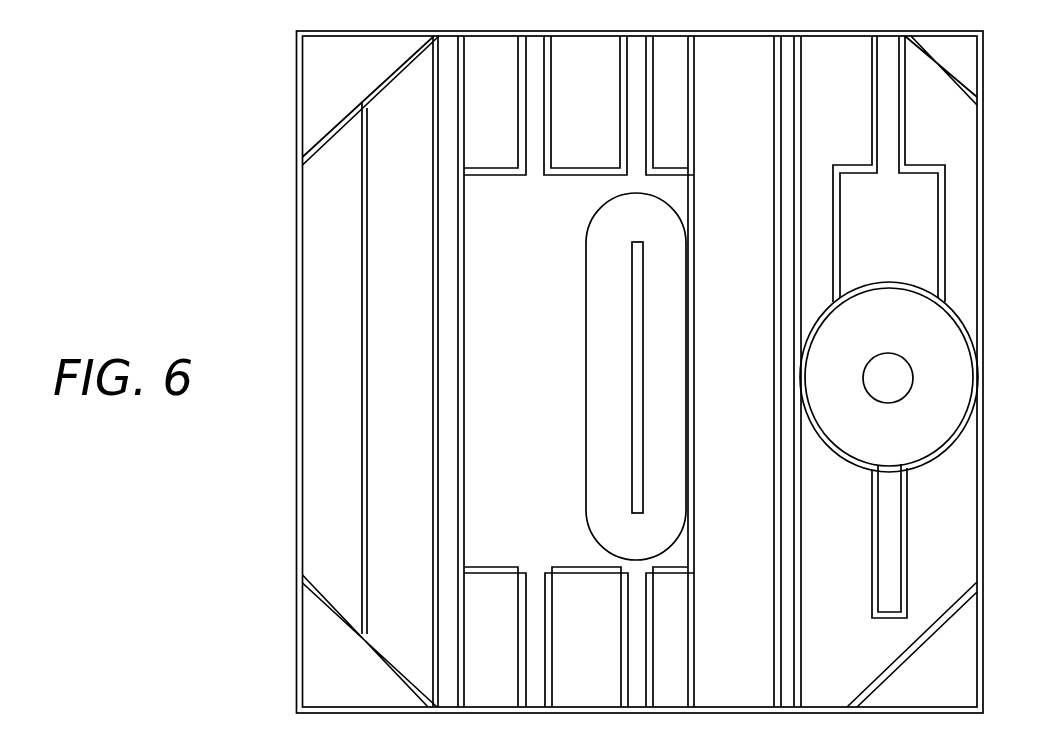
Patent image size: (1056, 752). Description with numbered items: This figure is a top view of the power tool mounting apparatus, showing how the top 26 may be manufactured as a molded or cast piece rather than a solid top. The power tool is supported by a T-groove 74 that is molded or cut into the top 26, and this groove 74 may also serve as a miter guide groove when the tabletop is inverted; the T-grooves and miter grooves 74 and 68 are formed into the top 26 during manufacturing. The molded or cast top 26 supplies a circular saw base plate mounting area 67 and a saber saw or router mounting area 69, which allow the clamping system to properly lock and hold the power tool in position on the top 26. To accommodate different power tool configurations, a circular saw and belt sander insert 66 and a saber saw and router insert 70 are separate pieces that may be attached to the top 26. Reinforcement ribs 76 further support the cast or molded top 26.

The top 26 is at (983, 515).
The circular saw and belt sander insert 66 is at (673, 288).
The circular saw base plate mounting area 67 is at (484, 501).
The miter groove 68 is at (787, 700).
The saber saw or router mounting area 69 is at (927, 215).
The saber saw and router insert 70 is at (955, 338).
The T-groove 74 is at (535, 700).
The reinforcement ribs 76 is at (387, 75).